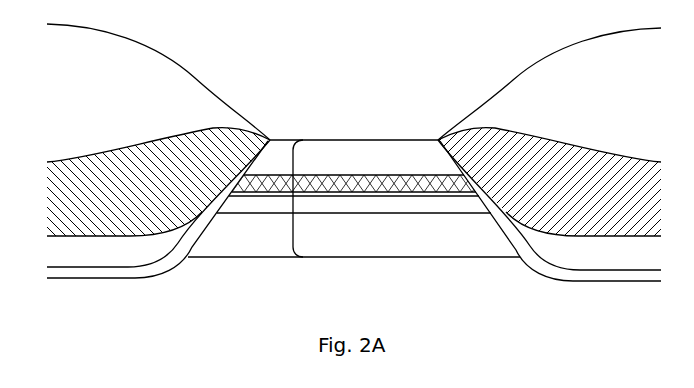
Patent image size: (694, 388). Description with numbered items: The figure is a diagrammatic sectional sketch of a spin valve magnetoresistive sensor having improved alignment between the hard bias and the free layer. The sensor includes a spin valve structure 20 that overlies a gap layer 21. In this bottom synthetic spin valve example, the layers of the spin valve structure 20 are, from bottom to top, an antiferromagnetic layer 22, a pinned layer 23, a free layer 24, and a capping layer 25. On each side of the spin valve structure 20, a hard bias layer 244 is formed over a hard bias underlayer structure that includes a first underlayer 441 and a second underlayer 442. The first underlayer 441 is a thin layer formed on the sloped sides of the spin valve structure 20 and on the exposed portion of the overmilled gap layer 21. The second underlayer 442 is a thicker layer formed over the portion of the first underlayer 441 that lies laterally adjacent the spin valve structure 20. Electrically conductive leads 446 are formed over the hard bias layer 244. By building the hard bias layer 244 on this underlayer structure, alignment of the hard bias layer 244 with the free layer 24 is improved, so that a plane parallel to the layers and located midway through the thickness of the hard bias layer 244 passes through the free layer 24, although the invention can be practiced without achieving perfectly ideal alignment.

The spin valve structure 20 is at (293, 202).
The gap layer 21 is at (435, 310).
The antiferromagnetic layer 22 is at (378, 232).
The pinned layer 23 is at (356, 206).
The free layer 24 is at (337, 180).
The capping layer 25 is at (313, 155).
The hard bias layer 244 is at (134, 201).
The first underlayer 441 is at (167, 266).
The second underlayer 442 is at (95, 264).
The electrically conductive leads 446 is at (137, 113).